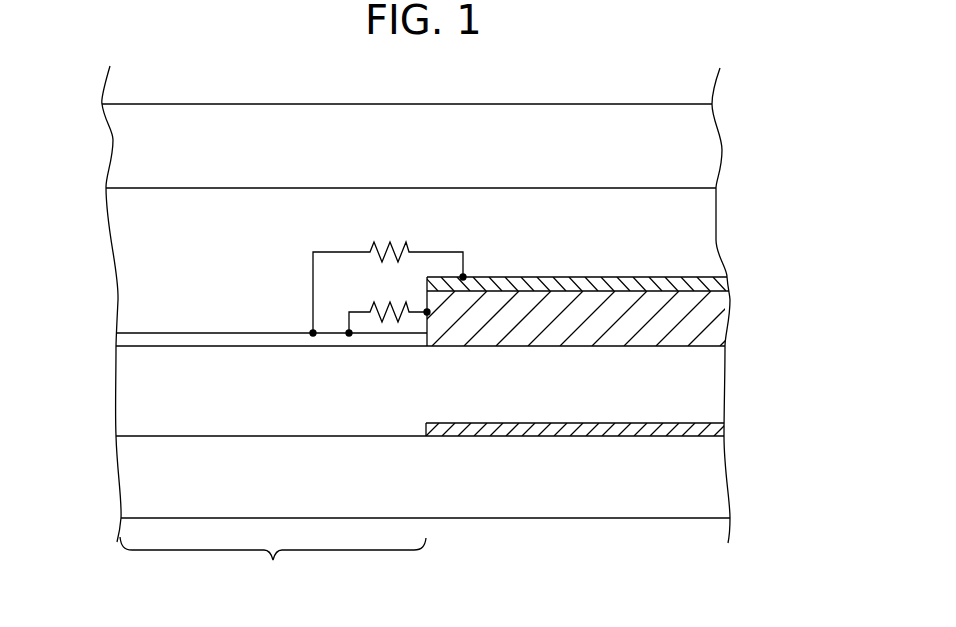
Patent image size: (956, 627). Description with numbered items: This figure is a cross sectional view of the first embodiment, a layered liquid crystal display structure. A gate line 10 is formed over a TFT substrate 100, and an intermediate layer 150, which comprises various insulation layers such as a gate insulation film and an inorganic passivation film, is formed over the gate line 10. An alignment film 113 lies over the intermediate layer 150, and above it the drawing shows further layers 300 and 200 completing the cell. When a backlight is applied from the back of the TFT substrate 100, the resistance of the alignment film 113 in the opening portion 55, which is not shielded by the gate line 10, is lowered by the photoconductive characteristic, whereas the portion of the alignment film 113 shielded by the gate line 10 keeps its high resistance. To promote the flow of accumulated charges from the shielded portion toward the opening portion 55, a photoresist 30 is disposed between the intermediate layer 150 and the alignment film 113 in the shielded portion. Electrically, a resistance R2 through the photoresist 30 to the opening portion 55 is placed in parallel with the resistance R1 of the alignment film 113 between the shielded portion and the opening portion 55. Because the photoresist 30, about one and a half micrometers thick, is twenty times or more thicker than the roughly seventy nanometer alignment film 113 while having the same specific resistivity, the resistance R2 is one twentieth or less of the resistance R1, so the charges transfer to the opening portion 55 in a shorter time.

The second substrate 200 is at (705, 147).
The liquid crystal layer 300 is at (705, 232).
The alignment film 113 is at (705, 283).
The photoresist 30 is at (710, 320).
The intermediate layer 150 is at (705, 388).
The gate line 10 is at (705, 430).
The TFT substrate 100 is at (705, 484).
The opening portion 55 is at (273, 564).
The resistance R1 is at (388, 275).
The resistance R2 is at (388, 305).